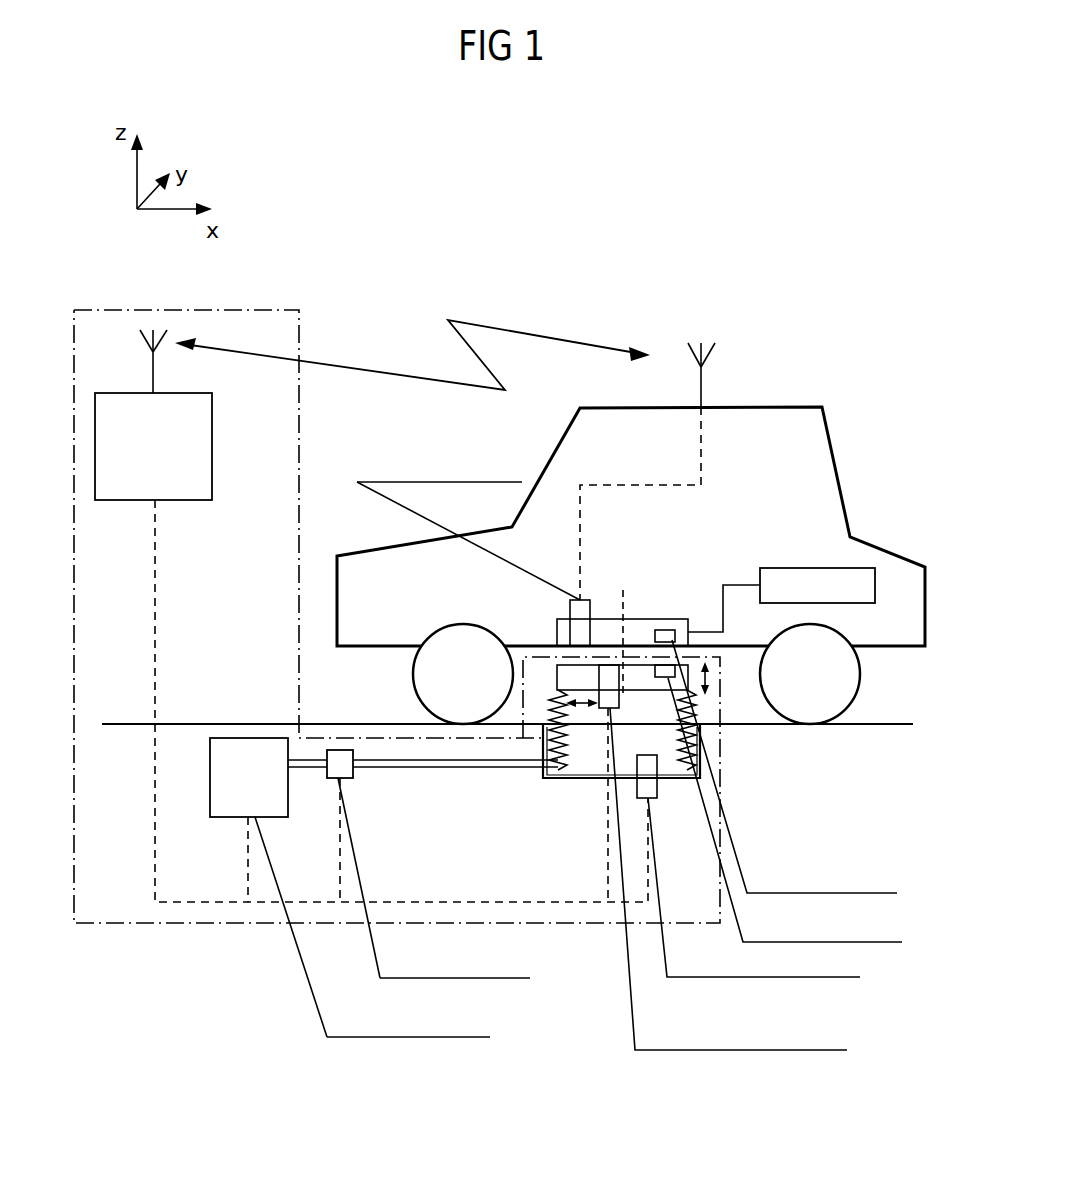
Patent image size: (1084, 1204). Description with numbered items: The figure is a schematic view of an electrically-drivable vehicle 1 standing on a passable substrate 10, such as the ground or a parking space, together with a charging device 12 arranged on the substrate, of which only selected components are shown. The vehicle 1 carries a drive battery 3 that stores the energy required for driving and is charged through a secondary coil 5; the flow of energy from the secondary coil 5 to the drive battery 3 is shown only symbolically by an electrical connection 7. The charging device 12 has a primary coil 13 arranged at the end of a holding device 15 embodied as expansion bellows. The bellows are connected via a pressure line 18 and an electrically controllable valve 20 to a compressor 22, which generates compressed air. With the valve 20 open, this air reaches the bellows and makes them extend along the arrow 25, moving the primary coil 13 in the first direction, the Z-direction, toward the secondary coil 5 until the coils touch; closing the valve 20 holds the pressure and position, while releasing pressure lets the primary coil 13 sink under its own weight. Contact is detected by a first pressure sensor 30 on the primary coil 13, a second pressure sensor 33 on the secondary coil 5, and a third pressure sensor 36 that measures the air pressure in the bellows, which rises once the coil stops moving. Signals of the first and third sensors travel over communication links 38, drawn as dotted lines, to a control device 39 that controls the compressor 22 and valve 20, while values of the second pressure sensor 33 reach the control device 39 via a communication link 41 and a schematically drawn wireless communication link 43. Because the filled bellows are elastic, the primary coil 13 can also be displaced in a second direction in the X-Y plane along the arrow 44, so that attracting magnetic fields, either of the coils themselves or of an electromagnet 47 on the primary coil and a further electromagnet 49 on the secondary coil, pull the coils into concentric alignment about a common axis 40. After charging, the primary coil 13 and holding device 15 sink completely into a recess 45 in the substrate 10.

The electrically-drivable vehicle 1 is at (835, 456).
The drive battery 3 is at (797, 568).
The secondary coil 5 is at (640, 618).
The electrical connection 7 is at (742, 583).
The substrate 10 is at (888, 726).
The charging device 12 is at (157, 925).
The primary coil 13 is at (682, 737).
The holding device (bellows) 15 is at (700, 753).
The pressure line 18 is at (452, 769).
The electrically controllable valve 20 is at (348, 778).
The compressor 22 is at (273, 818).
The arrow 25 is at (712, 678).
The first pressure sensor 30 is at (599, 680).
The second pressure sensor 33 is at (570, 603).
The third pressure sensor 36 is at (651, 800).
The communication links 38 is at (504, 900).
The control device 39 is at (212, 447).
The axis 40 is at (619, 602).
The communication link 41 is at (703, 447).
The wireless communication link 43 is at (375, 370).
The arrow 44 is at (578, 707).
The recess 45 is at (702, 772).
The electromagnet 47 is at (663, 680).
The electromagnet 49 is at (663, 630).